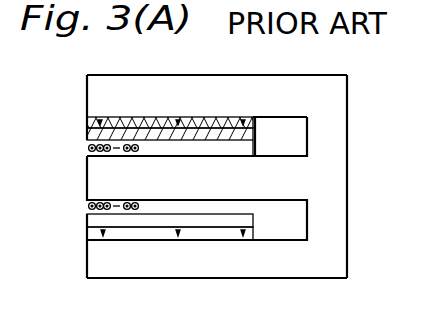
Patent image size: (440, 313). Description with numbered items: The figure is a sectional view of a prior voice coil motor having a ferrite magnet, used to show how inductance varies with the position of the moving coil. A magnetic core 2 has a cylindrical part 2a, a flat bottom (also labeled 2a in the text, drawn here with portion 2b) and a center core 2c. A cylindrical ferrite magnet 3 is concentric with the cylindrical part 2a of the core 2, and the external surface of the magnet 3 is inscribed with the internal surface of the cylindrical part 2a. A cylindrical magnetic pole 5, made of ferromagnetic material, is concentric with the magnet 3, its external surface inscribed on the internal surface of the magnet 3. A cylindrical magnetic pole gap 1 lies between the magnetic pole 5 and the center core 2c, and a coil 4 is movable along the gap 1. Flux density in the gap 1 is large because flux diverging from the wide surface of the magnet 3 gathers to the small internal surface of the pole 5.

The magnetic pole gap 1 is at (215, 147).
The magnetic core 2 is at (93, 177).
The cylindrical part 2a is at (200, 81).
The core back portion 2b is at (343, 155).
The center core 2c is at (291, 163).
The ferrite magnet 3 is at (90, 123).
The coil 4 is at (88, 206).
The magnetic pole 5 is at (92, 135).